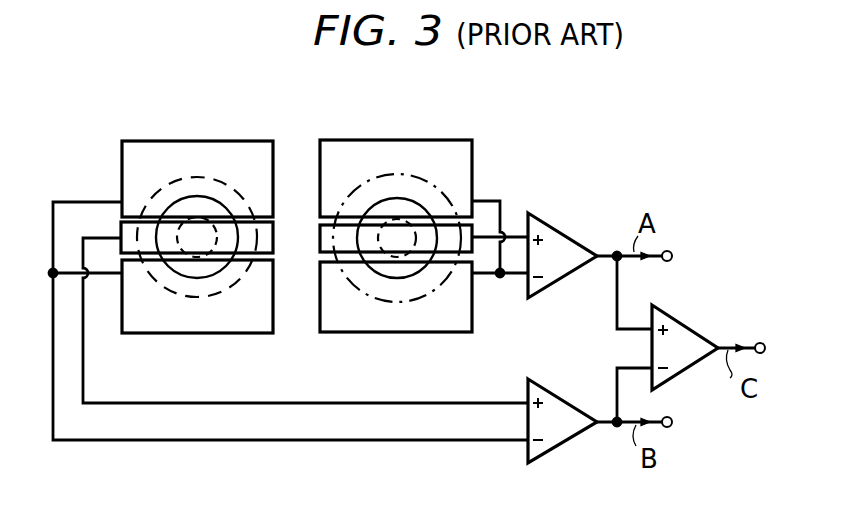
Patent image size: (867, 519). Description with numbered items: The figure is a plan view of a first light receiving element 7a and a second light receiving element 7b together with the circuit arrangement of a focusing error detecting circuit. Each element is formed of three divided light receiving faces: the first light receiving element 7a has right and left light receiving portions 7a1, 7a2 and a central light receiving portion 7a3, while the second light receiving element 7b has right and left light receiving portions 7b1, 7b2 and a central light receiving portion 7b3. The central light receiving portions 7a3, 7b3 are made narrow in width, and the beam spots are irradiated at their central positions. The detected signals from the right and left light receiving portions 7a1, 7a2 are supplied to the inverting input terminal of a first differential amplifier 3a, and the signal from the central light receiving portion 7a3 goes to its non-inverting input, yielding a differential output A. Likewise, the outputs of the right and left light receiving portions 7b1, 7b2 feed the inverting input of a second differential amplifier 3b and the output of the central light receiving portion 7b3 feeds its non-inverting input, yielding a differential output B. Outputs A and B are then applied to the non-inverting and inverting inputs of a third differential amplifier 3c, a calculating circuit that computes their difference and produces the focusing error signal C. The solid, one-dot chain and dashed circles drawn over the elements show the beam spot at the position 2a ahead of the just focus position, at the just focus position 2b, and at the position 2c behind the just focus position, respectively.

The second light receiving element 7b is at (159, 230).
The light receiving portion 7b1 is at (128, 163).
The light receiving portion 7b2 is at (183, 317).
The central light receiving portion 7b3 is at (120, 223).
The first light receiving element 7a is at (444, 230).
The light receiving portion 7a1 is at (463, 153).
The light receiving portion 7a2 is at (407, 318).
The central light receiving portion 7a3 is at (476, 221).
The position ahead of the just focus position 2a is at (348, 188).
The just focus position 2b is at (357, 275).
The position behind the just focus position 2c is at (370, 228).
The first differential amplifier 3a is at (568, 230).
The second differential amplifier 3b is at (578, 378).
The third differential amplifier 3c is at (680, 322).